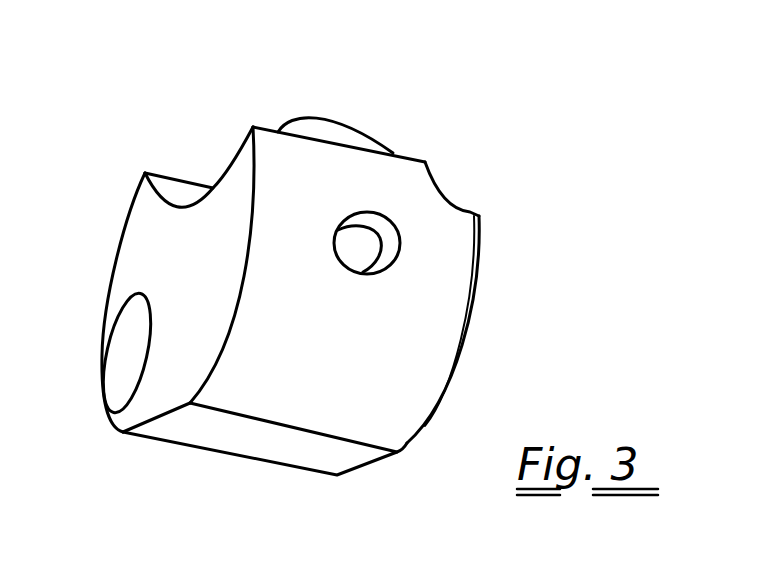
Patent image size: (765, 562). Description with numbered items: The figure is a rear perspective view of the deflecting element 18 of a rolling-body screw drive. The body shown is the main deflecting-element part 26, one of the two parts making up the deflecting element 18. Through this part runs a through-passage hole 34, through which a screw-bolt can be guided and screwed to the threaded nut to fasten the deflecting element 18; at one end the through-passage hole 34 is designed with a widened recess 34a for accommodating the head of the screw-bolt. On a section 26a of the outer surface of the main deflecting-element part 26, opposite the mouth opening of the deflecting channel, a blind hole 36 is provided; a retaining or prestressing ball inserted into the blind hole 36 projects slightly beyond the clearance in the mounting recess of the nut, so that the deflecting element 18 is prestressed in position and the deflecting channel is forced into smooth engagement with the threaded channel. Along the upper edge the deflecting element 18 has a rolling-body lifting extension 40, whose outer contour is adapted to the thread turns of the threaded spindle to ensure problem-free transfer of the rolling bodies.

The deflecting element 18 is at (335, 258).
The main deflecting-element part 26 is at (342, 258).
The section of the outer surface of the main deflecting-element part 26a is at (390, 207).
The through-passage hole 34 is at (150, 290).
The widened recess 34a is at (128, 363).
The blind hole 36 is at (353, 257).
The rolling-body lifting extension 40 is at (332, 128).